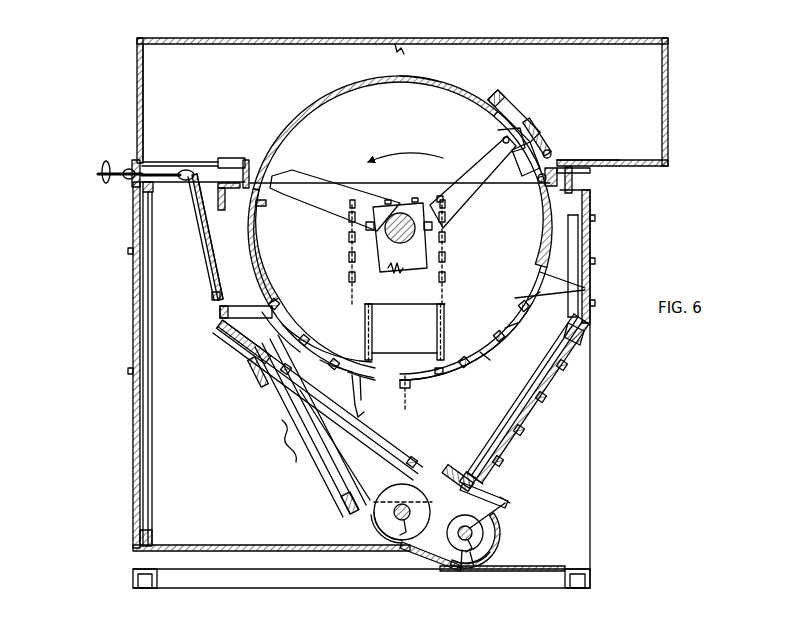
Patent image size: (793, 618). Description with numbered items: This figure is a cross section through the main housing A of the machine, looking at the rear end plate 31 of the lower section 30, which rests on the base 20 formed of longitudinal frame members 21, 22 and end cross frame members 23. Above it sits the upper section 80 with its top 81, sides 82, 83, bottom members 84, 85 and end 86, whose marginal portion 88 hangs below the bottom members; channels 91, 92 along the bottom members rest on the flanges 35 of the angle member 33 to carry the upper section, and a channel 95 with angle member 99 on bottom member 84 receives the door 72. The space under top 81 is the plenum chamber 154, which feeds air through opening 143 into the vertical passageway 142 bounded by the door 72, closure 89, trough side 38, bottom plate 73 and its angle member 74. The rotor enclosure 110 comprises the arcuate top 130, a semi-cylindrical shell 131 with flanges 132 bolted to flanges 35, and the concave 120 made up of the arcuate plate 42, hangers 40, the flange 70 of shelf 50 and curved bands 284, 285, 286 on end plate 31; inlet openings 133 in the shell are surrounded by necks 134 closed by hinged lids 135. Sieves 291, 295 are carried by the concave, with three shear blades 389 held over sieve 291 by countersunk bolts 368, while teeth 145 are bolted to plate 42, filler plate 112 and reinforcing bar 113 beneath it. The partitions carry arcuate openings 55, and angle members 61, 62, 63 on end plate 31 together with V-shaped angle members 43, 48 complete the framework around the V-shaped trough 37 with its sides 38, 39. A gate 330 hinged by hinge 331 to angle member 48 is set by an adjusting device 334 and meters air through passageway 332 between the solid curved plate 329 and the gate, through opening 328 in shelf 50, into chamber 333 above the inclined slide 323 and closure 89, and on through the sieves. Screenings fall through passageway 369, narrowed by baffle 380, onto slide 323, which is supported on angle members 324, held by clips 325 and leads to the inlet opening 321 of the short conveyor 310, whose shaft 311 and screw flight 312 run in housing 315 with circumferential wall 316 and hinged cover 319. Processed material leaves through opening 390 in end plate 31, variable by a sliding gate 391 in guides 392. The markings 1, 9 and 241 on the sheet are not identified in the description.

The conveyor belt 1 is at (386, 522).
The section line 9 is at (414, 278).
The base 20 is at (592, 578).
The longitudinal frame member 21 is at (133, 578).
The longitudinal frame member 22 is at (592, 572).
The end cross frame member 23 is at (285, 580).
The lower section 30 is at (363, 375).
The end plate 31 is at (598, 445).
The angle member 33 is at (258, 228).
The flange 35 is at (584, 190).
The V-shaped trough 37 is at (370, 530).
The side of trough 38 is at (344, 510).
The side of trough 39 is at (476, 482).
The hanger 40 is at (260, 210).
The arcuate plate 42 is at (436, 348).
The V-shaped angle member 43 is at (584, 335).
The V-shaped angle member 48 is at (218, 316).
The shelf 50 is at (262, 348).
The arcuate opening 55 is at (498, 338).
The angle member 61 is at (345, 455).
The angle member 62 is at (578, 252).
The angle member 63 is at (152, 425).
The flange 70 is at (280, 320).
The door 72 is at (128, 358).
The bottom plate 73 is at (250, 545).
The angle member 74 is at (158, 534).
The upper section 80 is at (404, 88).
The top 81 is at (318, 40).
The side 82 is at (137, 100).
The side 83 is at (668, 152).
The bottom member 84 is at (240, 158).
The bottom member 85 is at (622, 160).
The end 86 is at (650, 104).
The marginal portion 88 is at (348, 180).
The closure 89 is at (290, 392).
The channel 91 is at (222, 158).
The channel 92 is at (590, 171).
The channel 95 is at (148, 160).
The angle member 99 is at (158, 194).
The enclosure 110 is at (425, 76).
The filler plate 112 is at (362, 385).
The reinforcing bar 113 is at (410, 386).
The concave 120 is at (292, 416).
The arcuate top 130 is at (407, 240).
The semi-cylindrical shell 131 is at (305, 104).
The flange 132 is at (256, 165).
The inlet opening 133 is at (522, 160).
The neck 134 is at (520, 112).
The lid 135 is at (546, 142).
The vertical passageway 142 is at (145, 272).
The opening 143 is at (190, 165).
The tooth 145 is at (444, 330).
The plenum chamber 154 is at (234, 66).
The drive roller 241 is at (398, 524).
The curved band 284 is at (282, 292).
The curved band 285 is at (318, 348).
The curved band 286 is at (540, 262).
The sieve 291 is at (470, 368).
The sieve 295 is at (330, 370).
The short conveyor 310 is at (474, 536).
The shaft 311 is at (506, 500).
The screw flight 312 is at (460, 568).
The conveyor housing 315 is at (496, 522).
The circumferential wall 316 is at (490, 554).
The cover 319 is at (505, 498).
The inlet opening 321 is at (458, 474).
The inclined slide 323 is at (383, 438).
The angle member 324 is at (330, 440).
The clip 325 is at (272, 378).
The opening 328 is at (222, 332).
The solid curved plate 329 is at (240, 256).
The gate 330 is at (216, 282).
The hinge 331 is at (212, 298).
The passageway 332 is at (226, 238).
The chamber 333 is at (524, 451).
The adjusting device 334 is at (98, 174).
The countersunk bolt 368 is at (586, 290).
The passageway 369 is at (250, 364).
The baffle 380 is at (343, 368).
The shear blade 389 is at (530, 300).
The opening 390 is at (440, 378).
The gate 391 is at (430, 304).
The guide 392 is at (372, 336).